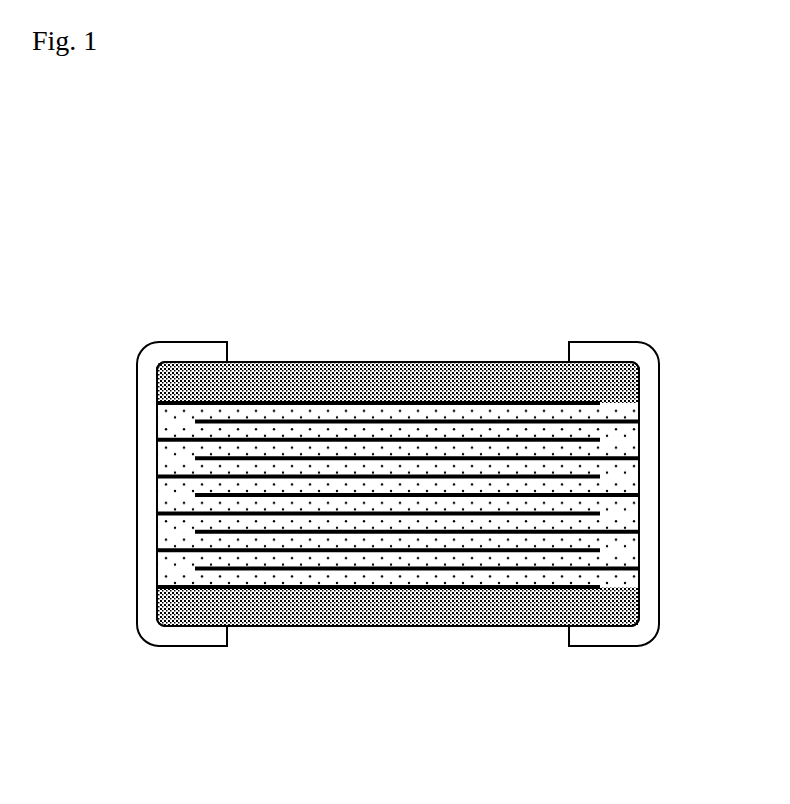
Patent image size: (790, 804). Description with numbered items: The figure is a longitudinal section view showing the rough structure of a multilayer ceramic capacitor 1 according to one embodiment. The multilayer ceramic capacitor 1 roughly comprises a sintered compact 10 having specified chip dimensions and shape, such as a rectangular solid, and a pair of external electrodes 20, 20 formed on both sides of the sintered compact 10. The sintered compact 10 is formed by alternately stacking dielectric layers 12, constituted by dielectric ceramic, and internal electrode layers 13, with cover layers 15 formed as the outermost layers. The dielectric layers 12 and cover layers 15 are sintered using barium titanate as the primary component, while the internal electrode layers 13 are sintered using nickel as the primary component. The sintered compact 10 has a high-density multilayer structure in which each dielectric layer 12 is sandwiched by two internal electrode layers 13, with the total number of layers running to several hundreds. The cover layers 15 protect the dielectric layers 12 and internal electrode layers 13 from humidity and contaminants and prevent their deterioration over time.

The multilayer ceramic capacitor 1 is at (646, 226).
The sintered compact 10 is at (470, 360).
The dielectric layers 12 is at (493, 522).
The internal electrode layers 13 is at (389, 537).
The cover layers 15 is at (343, 372).
The external electrodes 20 is at (148, 366).